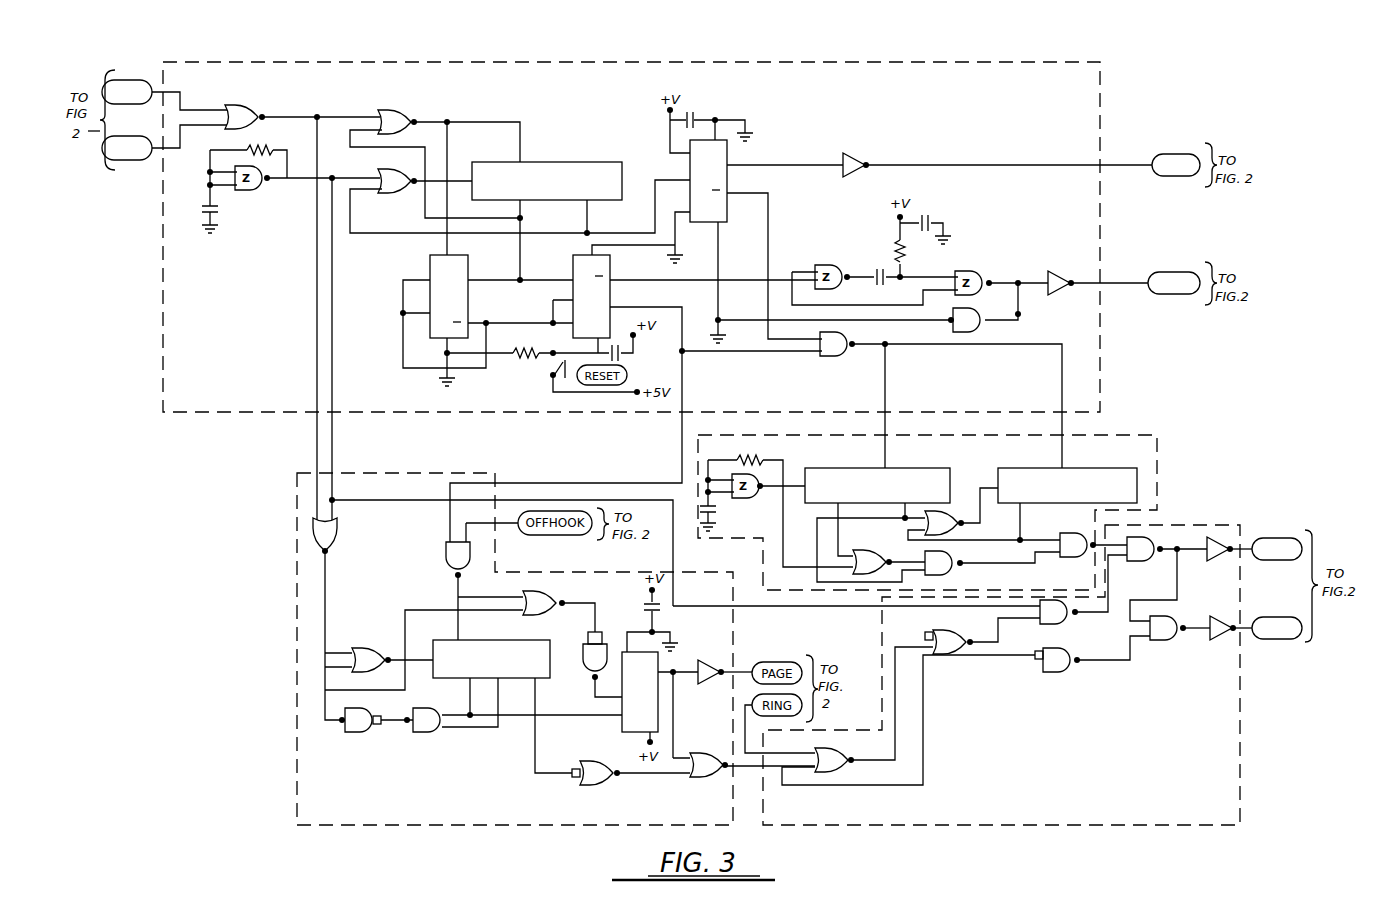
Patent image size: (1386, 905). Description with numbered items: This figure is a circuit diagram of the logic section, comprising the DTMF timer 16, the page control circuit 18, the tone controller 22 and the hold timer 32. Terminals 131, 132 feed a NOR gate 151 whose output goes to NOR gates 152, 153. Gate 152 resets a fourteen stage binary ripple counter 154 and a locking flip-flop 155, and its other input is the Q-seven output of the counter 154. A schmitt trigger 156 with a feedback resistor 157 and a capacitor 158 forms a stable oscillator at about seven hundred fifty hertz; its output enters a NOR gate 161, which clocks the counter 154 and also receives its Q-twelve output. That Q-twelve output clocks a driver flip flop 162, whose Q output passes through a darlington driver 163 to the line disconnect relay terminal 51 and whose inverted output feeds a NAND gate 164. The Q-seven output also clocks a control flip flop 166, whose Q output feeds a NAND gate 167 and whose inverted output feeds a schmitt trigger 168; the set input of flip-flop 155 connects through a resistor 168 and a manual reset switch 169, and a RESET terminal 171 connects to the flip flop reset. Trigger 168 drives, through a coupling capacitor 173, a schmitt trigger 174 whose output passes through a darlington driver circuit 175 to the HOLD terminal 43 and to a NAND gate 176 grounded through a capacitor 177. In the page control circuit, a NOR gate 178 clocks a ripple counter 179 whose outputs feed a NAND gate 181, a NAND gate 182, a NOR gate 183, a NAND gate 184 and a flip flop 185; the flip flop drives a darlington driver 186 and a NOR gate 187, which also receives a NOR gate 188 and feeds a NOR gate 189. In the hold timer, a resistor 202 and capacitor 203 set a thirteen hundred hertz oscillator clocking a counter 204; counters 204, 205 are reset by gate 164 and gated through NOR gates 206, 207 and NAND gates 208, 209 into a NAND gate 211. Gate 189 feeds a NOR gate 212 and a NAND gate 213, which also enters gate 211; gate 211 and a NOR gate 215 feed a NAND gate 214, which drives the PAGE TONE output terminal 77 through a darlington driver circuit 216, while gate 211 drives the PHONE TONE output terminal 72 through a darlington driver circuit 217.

The DTMF timer 16 is at (1102, 379).
The page control circuit 18 is at (297, 740).
The tone controller 22 is at (1240, 722).
The hold timer 32 is at (1131, 436).
The HOLD terminal 43 is at (1160, 271).
The line disconnect relay (LDR) terminal 51 is at (1160, 153).
The PHONE TONE output terminal 72 is at (1256, 562).
The PAGE TONE output terminal 77 is at (1258, 641).
The terminal 131 is at (138, 160).
The terminal 132 is at (133, 80).
The NOR gate 151 is at (252, 114).
The NOR gate 152 is at (405, 110).
The NOR gate 153 is at (338, 537).
The fourteen stage binary ripple counter 154 is at (572, 160).
The locking flip-flop 155 is at (470, 262).
The schmitt trigger 156 is at (268, 184).
The feedback resistor 157 is at (265, 148).
The capacitor 158 is at (217, 211).
The NOR gate 161 is at (395, 190).
The driver flip flop 162 is at (730, 153).
The darlington driver 163 is at (847, 158).
The NAND gate 164 is at (850, 340).
The control flip flop 166 is at (618, 262).
The NAND gate 167 is at (447, 550).
The schmitt trigger 168 is at (520, 349).
The manual reset switch 169 is at (550, 375).
The RESET terminal 171 is at (627, 368).
The coupling capacitor 173 is at (888, 258).
The schmitt trigger 174 is at (958, 270).
The darlington driver circuit 175 is at (1050, 270).
The NAND gate 176 is at (955, 312).
The capacitor 177 is at (728, 334).
The NOR gate 178 is at (350, 650).
The fourteen stage binary ripple counter 179 is at (480, 638).
The NAND gate 181 is at (433, 732).
The NAND gate 182 is at (361, 732).
The NOR gate 183 is at (548, 596).
The NAND gate 184 is at (587, 677).
The flip flop 185 is at (626, 732).
The darlington driver 186 is at (712, 655).
The NOR gate 187 is at (688, 780).
The NOR gate 188 is at (584, 784).
The NOR gate 189 is at (825, 752).
The resistor 202 is at (760, 455).
The capacitor 203 is at (718, 510).
The ripple counter 204 is at (923, 466).
The counter 205 is at (1088, 466).
The NOR gate 206 is at (855, 550).
The NOR gate 207 is at (950, 516).
The NAND gate 208 is at (1062, 533).
The NAND gate 209 is at (955, 562).
The NAND gate 211 is at (1158, 544).
The NOR gate 212 is at (965, 632).
The NAND gate 213 is at (1060, 625).
The NAND gate 214 is at (1153, 641).
The NOR gate 215 is at (1045, 673).
The darlington driver circuit 216 is at (1214, 640).
The darlington driver circuit 217 is at (1210, 562).